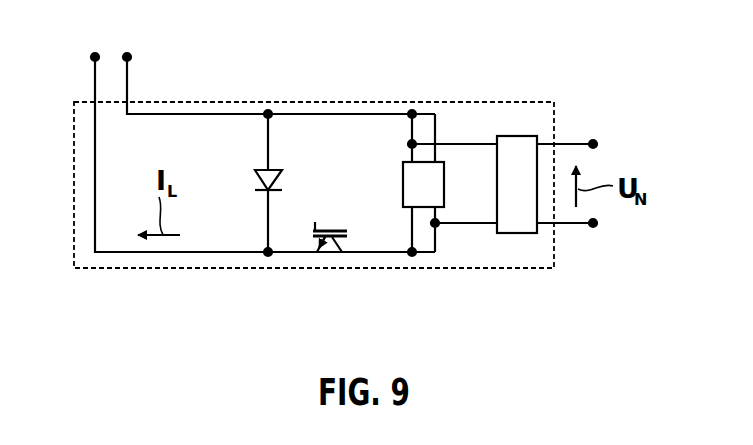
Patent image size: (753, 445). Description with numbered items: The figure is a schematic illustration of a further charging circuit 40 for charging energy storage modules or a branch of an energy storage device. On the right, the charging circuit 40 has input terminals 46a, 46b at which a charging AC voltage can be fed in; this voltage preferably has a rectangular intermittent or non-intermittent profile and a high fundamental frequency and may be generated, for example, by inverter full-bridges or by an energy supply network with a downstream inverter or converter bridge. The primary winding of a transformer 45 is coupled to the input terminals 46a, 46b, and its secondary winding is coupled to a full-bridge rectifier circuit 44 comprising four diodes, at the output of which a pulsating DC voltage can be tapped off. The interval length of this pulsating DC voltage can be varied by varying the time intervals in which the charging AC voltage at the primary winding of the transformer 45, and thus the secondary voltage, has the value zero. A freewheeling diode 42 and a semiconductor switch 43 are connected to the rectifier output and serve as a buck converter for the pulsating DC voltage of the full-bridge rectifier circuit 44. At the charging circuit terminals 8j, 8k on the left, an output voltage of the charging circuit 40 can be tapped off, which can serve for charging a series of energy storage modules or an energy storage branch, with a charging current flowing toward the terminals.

The charging circuit terminal 8j is at (95, 57).
The charging circuit terminal 8k is at (127, 57).
The charging circuit 40 is at (312, 101).
The freewheeling diode 42 is at (256, 180).
The semiconductor switch 43 is at (329, 256).
The full-bridge rectifier circuit 44 is at (403, 165).
The transformer 45 is at (520, 136).
The input terminal 46a is at (598, 225).
The input terminal 46b is at (598, 143).